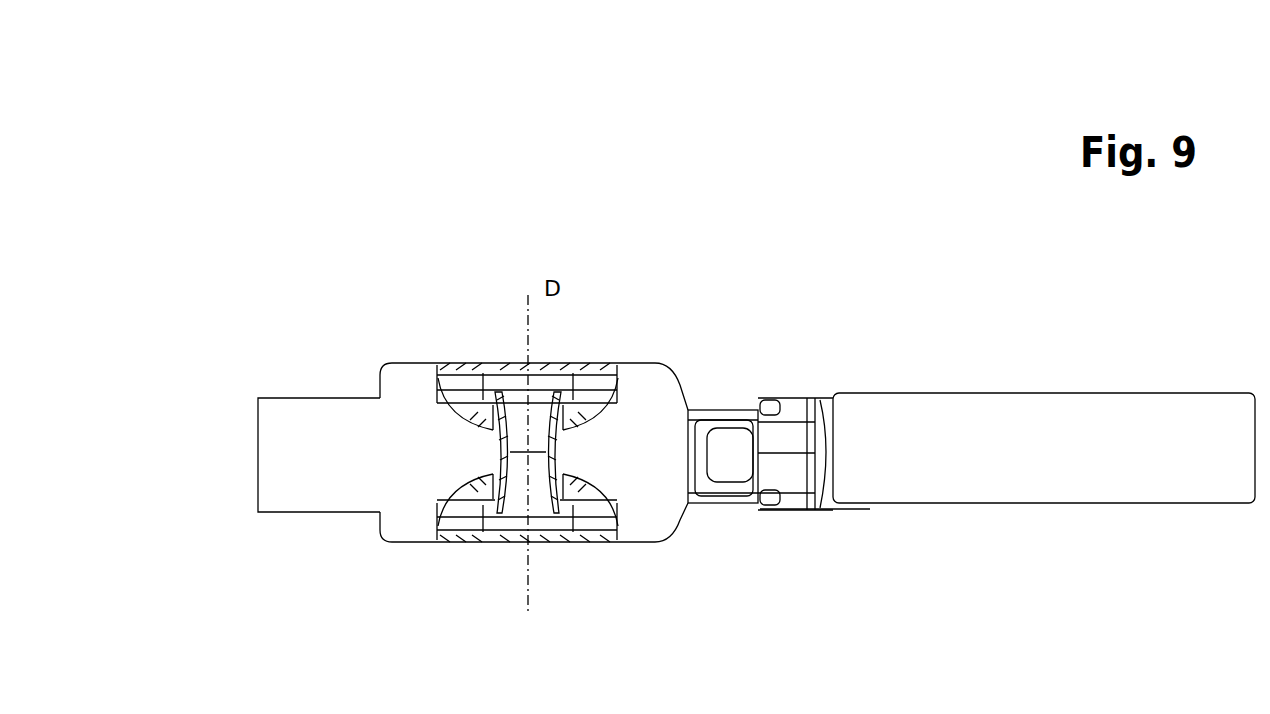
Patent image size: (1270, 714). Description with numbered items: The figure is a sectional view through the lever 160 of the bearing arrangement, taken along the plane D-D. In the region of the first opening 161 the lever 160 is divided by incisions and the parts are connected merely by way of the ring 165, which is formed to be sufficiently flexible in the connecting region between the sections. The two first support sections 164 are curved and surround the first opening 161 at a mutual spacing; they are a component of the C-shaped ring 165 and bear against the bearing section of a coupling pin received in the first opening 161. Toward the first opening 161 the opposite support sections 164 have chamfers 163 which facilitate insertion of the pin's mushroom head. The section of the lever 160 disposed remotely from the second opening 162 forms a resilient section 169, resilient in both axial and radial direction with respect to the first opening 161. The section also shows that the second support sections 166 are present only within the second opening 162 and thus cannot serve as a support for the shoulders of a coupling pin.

The lever 160 is at (314, 135).
The first opening 161 is at (520, 478).
The second opening 162 is at (740, 417).
The chamfers 163 is at (463, 412).
The first support sections 164 is at (491, 457).
The ring 165 is at (455, 355).
The second support sections 166 is at (728, 453).
The resilient section 169 is at (278, 447).